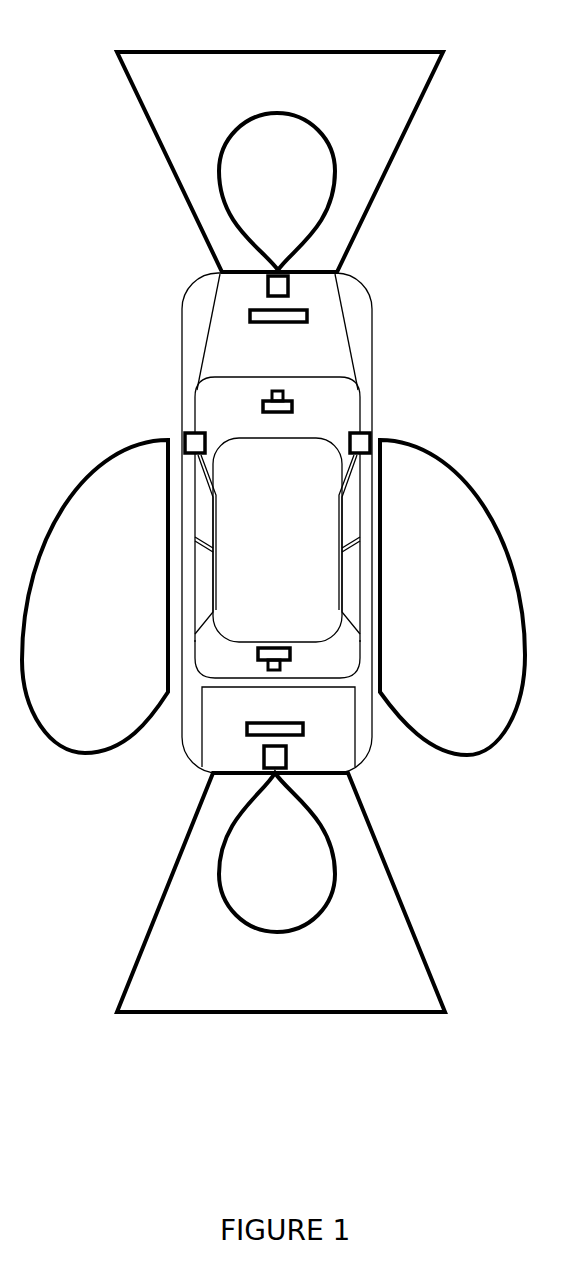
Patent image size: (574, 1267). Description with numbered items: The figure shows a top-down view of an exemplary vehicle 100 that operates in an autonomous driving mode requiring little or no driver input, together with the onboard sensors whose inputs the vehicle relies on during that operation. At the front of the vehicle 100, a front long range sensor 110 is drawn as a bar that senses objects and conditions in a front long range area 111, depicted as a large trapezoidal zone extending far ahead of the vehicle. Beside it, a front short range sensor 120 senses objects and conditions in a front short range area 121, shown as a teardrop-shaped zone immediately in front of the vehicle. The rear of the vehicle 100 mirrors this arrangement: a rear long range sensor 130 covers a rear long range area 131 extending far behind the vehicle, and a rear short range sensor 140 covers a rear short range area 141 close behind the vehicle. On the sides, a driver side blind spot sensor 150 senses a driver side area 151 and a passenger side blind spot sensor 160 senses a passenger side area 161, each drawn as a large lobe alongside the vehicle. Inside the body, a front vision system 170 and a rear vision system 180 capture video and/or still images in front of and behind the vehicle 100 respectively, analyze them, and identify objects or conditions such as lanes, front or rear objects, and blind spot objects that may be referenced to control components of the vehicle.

The vehicle 100 is at (360, 300).
The front long range sensor 110 is at (292, 308).
The front long range area 111 is at (475, 40).
The front short range sensor 120 is at (266, 270).
The front short range area 121 is at (322, 130).
The rear long range sensor 130 is at (290, 718).
The rear long range area 131 is at (432, 985).
The rear short range sensor 140 is at (263, 751).
The rear short range area 141 is at (326, 893).
The driver side blind spot sensor 150 is at (196, 431).
The driver side area 151 is at (128, 436).
The passenger side blind spot sensor 160 is at (366, 431).
The passenger side area 161 is at (418, 440).
The front vision system 170 is at (275, 390).
The rear vision system 180 is at (282, 646).